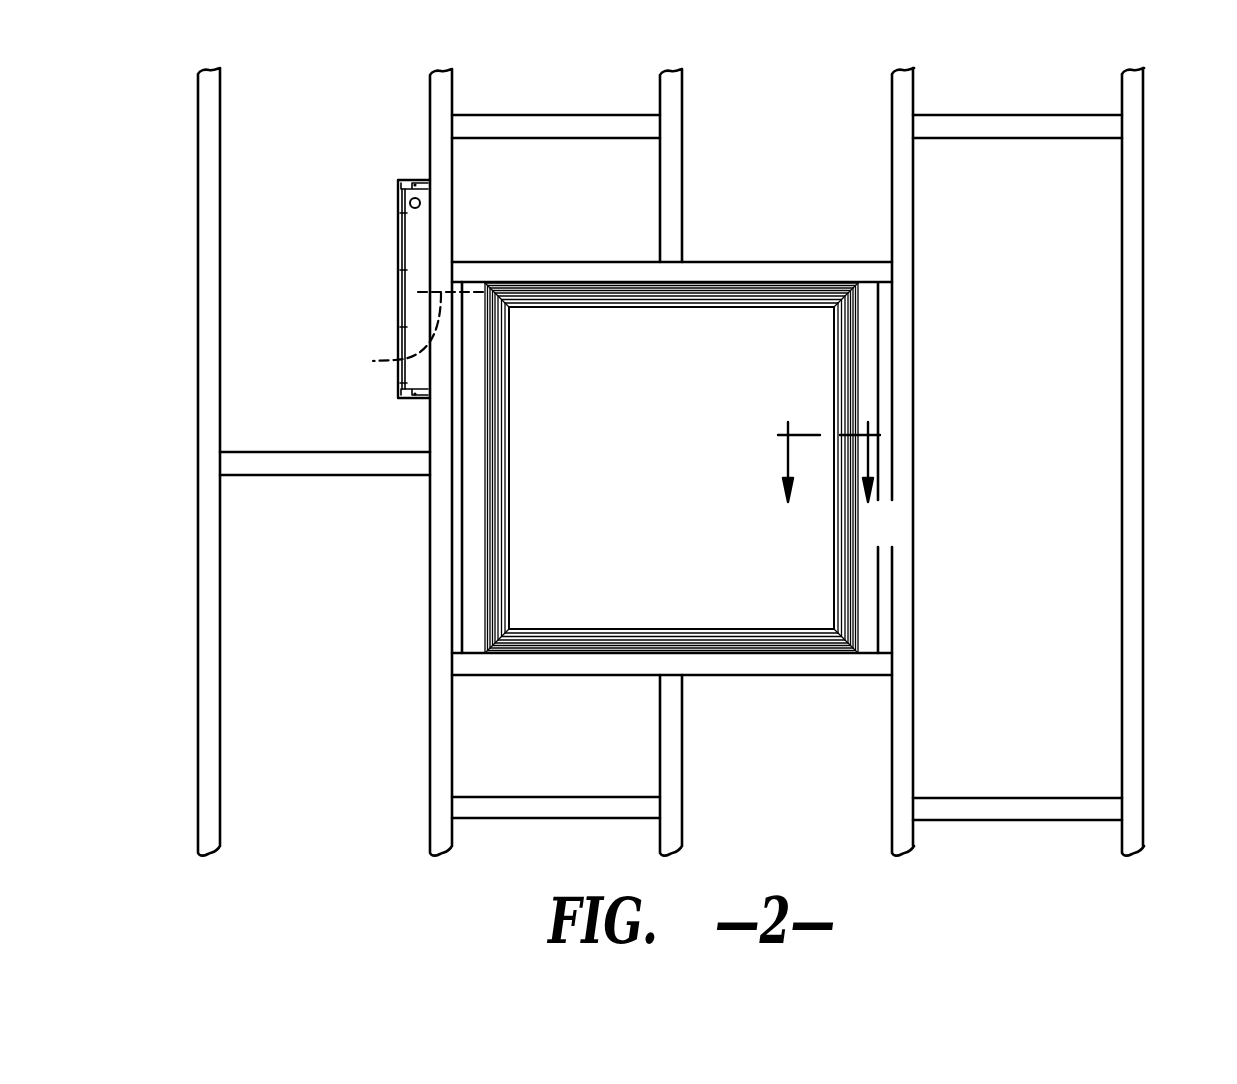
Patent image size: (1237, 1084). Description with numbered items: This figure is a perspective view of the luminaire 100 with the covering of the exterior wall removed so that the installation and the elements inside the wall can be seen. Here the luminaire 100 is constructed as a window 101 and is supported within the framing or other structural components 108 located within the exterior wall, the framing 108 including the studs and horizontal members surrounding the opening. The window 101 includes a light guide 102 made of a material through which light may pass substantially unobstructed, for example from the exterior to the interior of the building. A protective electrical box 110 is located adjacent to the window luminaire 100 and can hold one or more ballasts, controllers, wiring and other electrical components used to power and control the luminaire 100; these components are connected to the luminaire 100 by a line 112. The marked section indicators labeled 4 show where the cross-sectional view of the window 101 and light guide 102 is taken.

The luminaire 100 is at (705, 462).
The window 101 is at (602, 347).
The light guide 102 is at (800, 376).
The framing or other structural components 108 is at (1132, 277).
The electrical box 110 is at (417, 233).
The line 112 is at (404, 332).
The section line 4- 4 is at (836, 482).